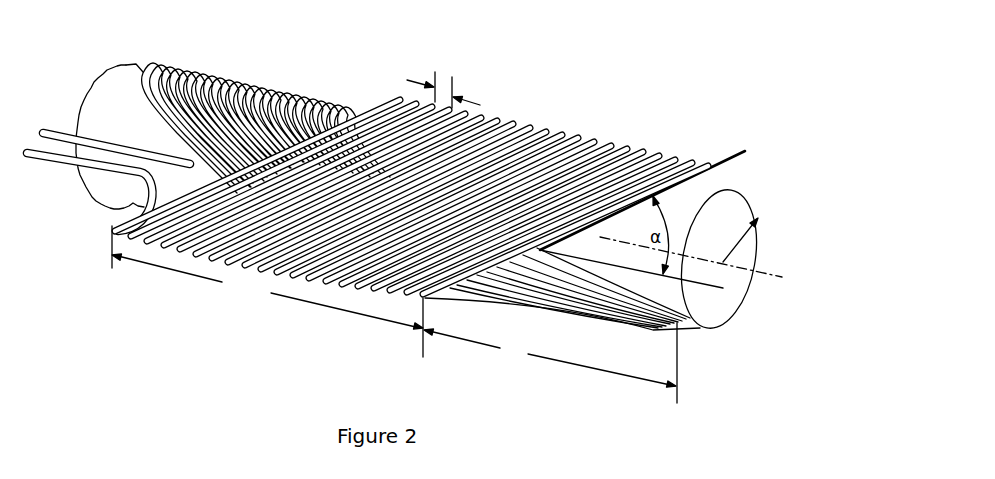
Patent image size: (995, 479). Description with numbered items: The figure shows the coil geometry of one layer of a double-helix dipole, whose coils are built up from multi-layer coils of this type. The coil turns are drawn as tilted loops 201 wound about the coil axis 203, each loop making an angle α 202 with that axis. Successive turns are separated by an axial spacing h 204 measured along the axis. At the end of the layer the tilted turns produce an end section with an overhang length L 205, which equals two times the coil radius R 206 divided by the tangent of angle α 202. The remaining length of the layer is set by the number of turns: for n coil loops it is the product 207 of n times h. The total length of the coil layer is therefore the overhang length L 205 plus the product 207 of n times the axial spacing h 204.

The tilted loops 201 is at (517, 122).
The angle α 202 is at (673, 235).
The coil axis 203 is at (773, 268).
The axial spacing h 204 is at (443, 80).
The overhang length L 205 is at (500, 355).
The coil radius R 206 is at (760, 233).
The product of n times h 207 is at (228, 292).